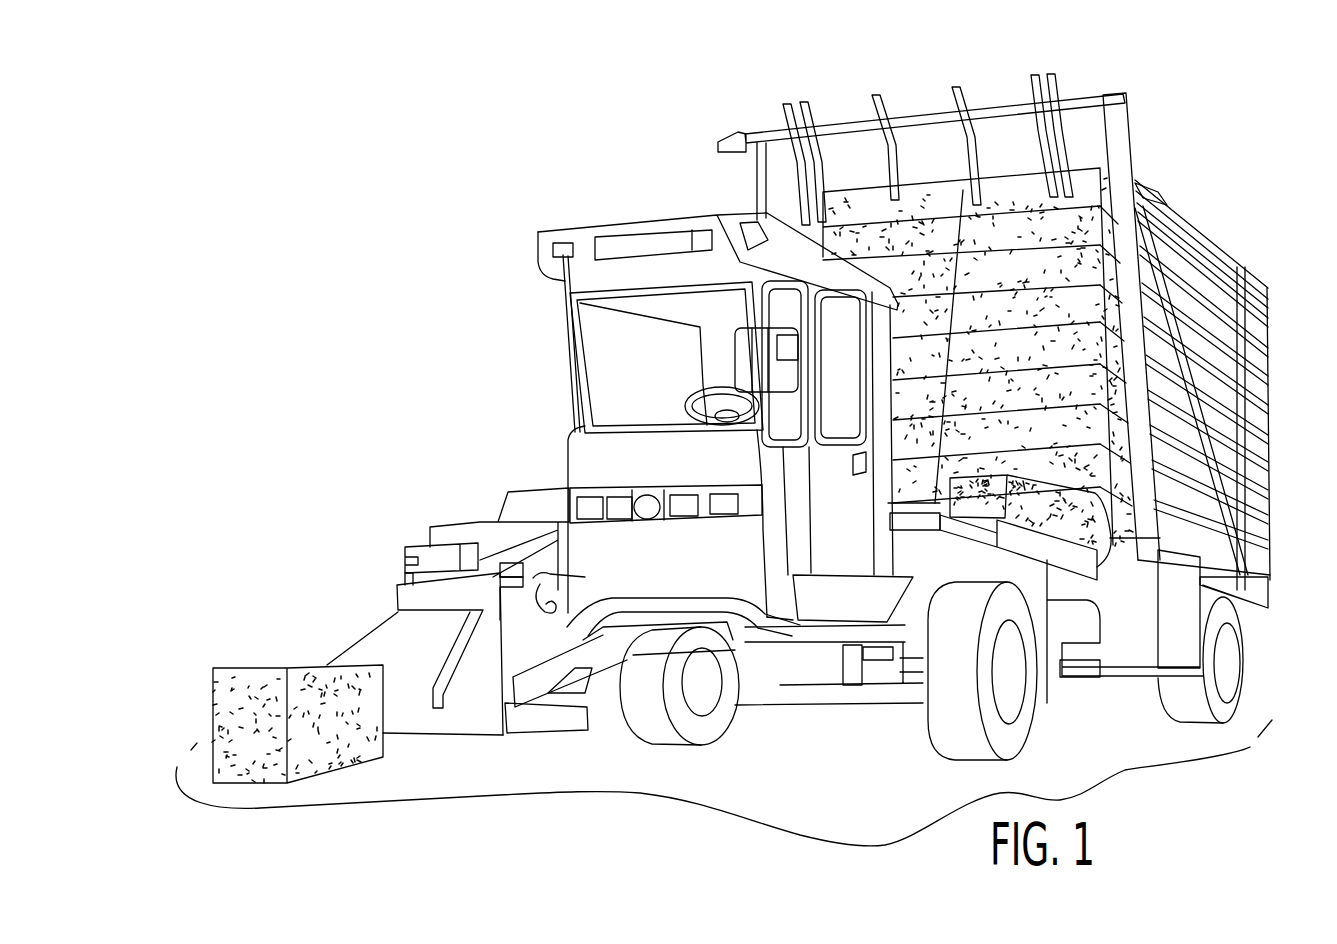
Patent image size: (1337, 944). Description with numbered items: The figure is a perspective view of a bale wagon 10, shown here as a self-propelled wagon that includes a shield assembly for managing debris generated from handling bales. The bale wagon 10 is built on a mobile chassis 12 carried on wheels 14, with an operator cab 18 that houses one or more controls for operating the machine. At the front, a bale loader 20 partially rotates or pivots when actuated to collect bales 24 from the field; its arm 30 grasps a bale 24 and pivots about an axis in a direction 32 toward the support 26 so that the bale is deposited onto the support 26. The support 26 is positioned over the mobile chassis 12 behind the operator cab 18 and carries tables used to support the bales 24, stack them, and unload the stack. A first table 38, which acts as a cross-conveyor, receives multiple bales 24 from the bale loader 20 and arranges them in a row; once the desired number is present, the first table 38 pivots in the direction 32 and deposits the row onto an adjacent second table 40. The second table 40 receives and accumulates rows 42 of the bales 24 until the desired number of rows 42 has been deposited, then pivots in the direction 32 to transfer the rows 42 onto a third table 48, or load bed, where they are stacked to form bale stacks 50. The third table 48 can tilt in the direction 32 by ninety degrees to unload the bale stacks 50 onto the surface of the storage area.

The bale wagon 10 is at (378, 148).
The mobile chassis 12 is at (832, 720).
The wheels 14 is at (1243, 690).
The operator cab 18 is at (530, 360).
The bale loader 20 is at (365, 625).
The bales 24 is at (232, 668).
The support 26 is at (1290, 418).
The arm 30 is at (362, 628).
The direction 32 is at (452, 441).
The first table 38 is at (913, 540).
The second table 40 is at (1040, 572).
The rows 42 is at (1180, 207).
The third table 48 is at (1265, 590).
The bale stacks 50 is at (1095, 70).